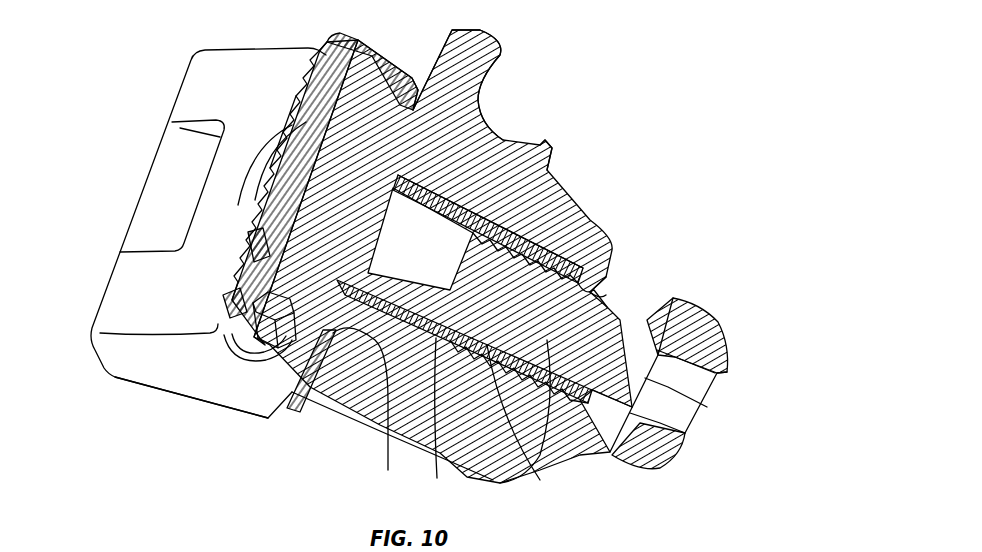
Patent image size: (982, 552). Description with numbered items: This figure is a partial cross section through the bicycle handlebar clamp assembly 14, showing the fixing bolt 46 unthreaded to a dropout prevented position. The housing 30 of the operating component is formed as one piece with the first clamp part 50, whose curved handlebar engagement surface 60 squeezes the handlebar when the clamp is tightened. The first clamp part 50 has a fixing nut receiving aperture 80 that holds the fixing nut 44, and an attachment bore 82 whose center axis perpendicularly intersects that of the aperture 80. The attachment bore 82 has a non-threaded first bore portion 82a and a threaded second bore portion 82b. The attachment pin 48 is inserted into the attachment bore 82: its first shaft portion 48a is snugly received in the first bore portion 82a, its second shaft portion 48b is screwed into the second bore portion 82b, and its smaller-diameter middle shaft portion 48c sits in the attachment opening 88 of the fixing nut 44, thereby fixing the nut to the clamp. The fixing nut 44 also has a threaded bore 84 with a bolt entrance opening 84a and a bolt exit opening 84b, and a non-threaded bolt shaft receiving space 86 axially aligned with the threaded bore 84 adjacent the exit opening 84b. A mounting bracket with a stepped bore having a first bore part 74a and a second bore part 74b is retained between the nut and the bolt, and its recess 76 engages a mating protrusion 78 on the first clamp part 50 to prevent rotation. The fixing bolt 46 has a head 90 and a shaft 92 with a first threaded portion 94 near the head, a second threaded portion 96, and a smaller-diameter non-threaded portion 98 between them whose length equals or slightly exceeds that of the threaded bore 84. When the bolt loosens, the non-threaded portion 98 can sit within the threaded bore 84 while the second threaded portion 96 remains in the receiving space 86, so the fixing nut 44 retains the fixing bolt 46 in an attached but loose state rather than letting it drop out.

The bicycle handlebar clamp assembly 14 is at (626, 82).
The housing 30 is at (513, 128).
The fixing nut 44 is at (518, 318).
The fixing bolt 46 is at (683, 297).
The attachment pin 48 is at (288, 364).
The first shaft portion 48a is at (230, 292).
The second shaft portion 48b is at (333, 68).
The middle shaft portion 48c is at (255, 222).
The first clamp part 50 is at (165, 383).
The handlebar engagement surface 60 is at (112, 293).
The first bore part 74a is at (537, 387).
The second bore part 74b is at (595, 302).
The recess 76 is at (388, 470).
The protrusion 78 is at (493, 120).
The fixing nut receiving aperture 80 is at (282, 134).
The attachment bore 82 is at (237, 345).
The first bore portion 82a is at (253, 242).
The second bore portion 82b is at (360, 60).
The threaded bore 84 is at (590, 287).
The bolt entrance opening 84a is at (597, 300).
The bolt exit opening 84b is at (560, 218).
The bolt shaft receiving space 86 is at (437, 478).
The attachment opening 88 is at (305, 145).
The head 90 is at (693, 447).
The shaft 92 is at (457, 256).
The first threaded portion 94 is at (610, 300).
The second threaded portion 96 is at (537, 145).
The non-threaded portion 98 is at (505, 460).